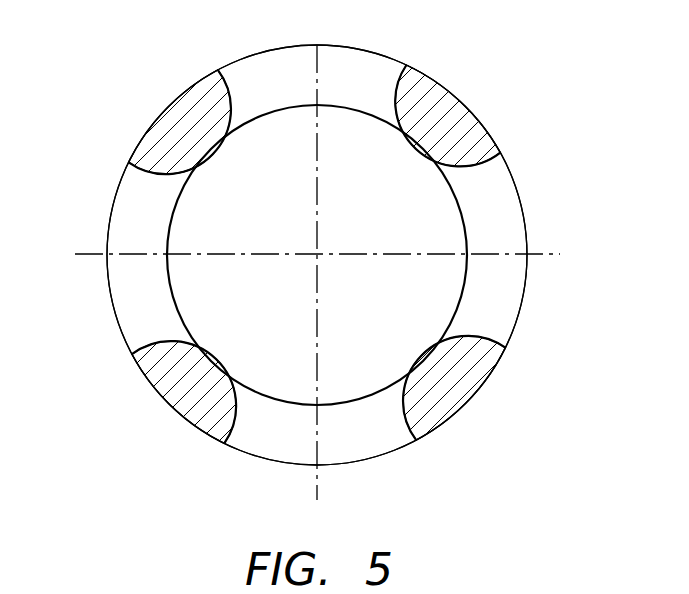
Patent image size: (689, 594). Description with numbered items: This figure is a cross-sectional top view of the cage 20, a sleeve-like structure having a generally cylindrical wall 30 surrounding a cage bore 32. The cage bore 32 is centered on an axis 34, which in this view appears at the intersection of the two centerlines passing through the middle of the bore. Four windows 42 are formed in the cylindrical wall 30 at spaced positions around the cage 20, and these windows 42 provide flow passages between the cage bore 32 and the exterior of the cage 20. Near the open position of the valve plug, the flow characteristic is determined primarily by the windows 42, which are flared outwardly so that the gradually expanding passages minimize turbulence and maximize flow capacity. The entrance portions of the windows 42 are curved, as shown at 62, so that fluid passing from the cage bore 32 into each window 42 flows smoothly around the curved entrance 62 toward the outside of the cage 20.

The cage 20 is at (147, 383).
The cylindrical wall 30 is at (165, 102).
The cage bore 32 is at (193, 272).
The axis 34 is at (316, 251).
The windows 42 is at (360, 70).
The curved entrance portions 62 is at (398, 90).